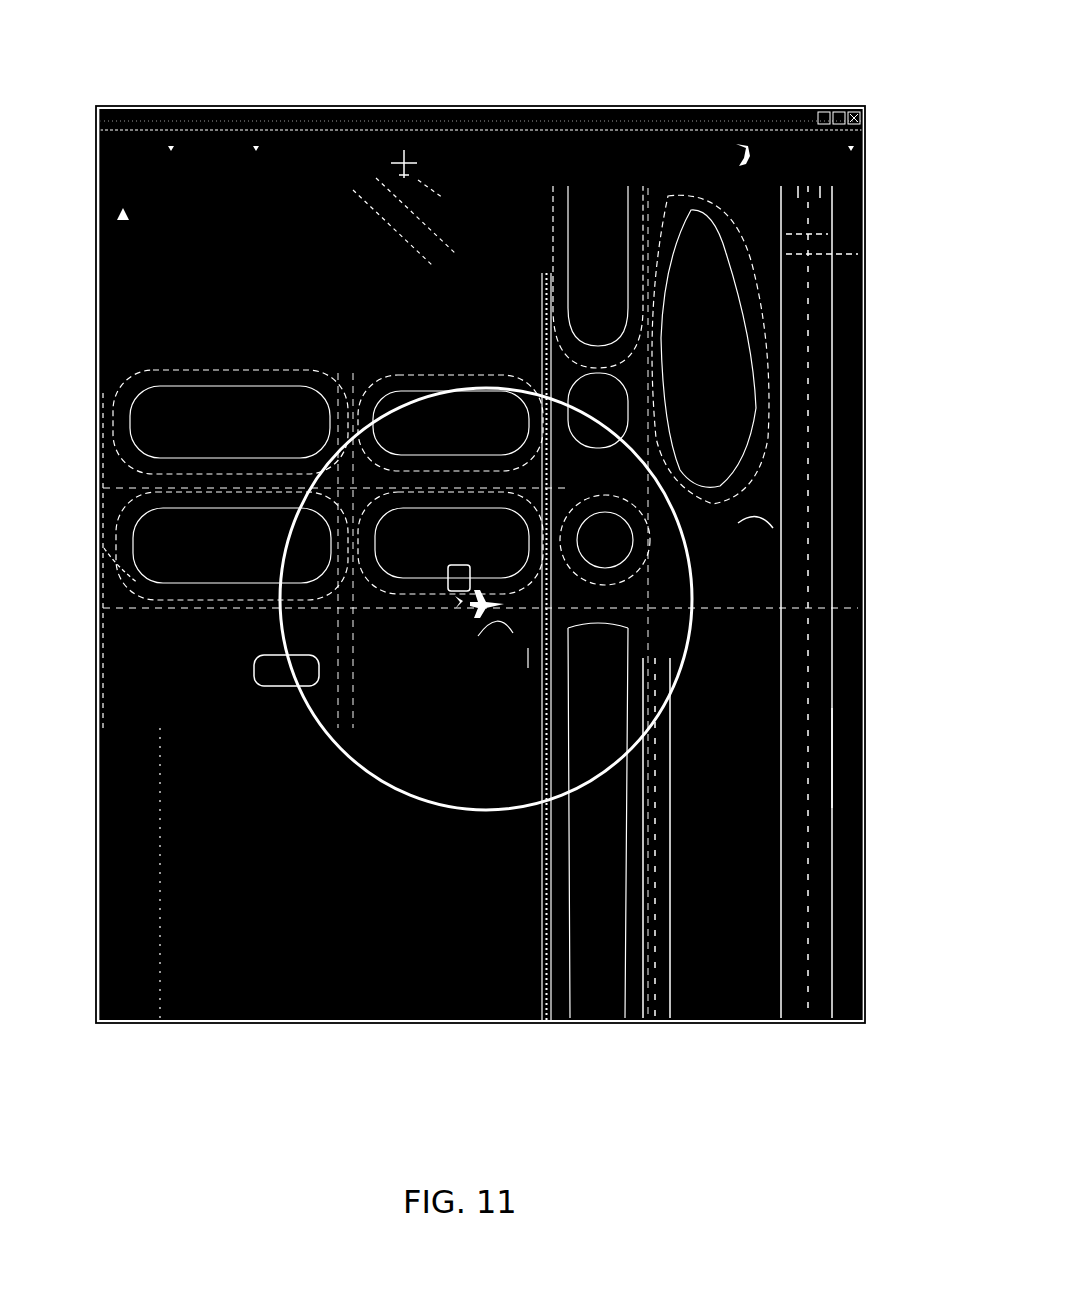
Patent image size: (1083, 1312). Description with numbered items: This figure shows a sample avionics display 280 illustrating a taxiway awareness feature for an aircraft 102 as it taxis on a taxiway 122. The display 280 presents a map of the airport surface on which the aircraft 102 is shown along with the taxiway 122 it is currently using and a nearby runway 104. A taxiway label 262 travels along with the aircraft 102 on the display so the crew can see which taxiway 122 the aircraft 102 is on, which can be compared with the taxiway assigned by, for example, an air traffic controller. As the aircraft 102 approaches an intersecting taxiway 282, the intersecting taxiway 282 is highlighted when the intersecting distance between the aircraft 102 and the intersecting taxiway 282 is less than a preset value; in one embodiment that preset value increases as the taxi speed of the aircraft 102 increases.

The avionics display 280 is at (647, 33).
The aircraft 102 is at (271, 1015).
The intersecting taxiway 282 is at (465, 1014).
The taxiway label 262 is at (92, 548).
The taxiway 122 is at (92, 680).
The runway 104 is at (858, 757).